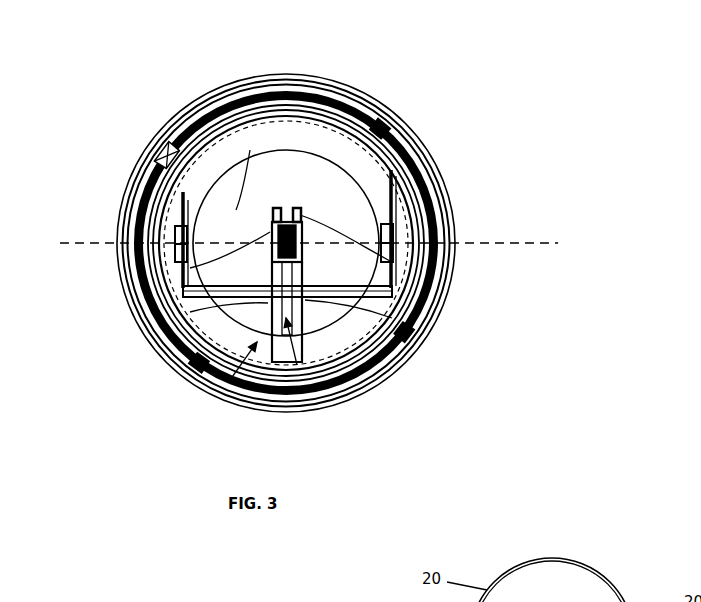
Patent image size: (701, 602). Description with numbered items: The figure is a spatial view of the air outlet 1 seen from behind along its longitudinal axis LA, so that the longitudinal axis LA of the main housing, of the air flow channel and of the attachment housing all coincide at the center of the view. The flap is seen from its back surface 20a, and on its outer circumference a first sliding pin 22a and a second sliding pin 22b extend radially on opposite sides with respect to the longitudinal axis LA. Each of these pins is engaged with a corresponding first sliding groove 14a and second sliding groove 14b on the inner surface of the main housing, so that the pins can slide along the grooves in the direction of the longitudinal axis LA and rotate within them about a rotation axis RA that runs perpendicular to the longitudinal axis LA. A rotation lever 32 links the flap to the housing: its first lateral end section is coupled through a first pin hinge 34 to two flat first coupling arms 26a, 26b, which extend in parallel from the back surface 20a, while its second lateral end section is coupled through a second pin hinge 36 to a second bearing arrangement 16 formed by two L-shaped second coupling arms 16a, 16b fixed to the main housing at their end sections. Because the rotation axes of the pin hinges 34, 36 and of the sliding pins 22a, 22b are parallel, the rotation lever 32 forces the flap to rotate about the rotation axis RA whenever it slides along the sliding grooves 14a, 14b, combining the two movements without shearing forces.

The air outlet 1 is at (462, 95).
The first sliding groove 14a is at (181, 210).
The second sliding groove 14b is at (393, 178).
The second bearing arrangement 16 is at (227, 383).
The second coupling arm 16a is at (200, 335).
The second coupling arm 16b is at (410, 340).
The back surface of the flap 20a is at (312, 195).
The first sliding pin 22a is at (178, 262).
The second sliding pin 22b is at (396, 243).
The first coupling arm 26a is at (165, 155).
The first coupling arm 26b is at (383, 127).
The rotation lever 32 is at (400, 305).
The first pin hinge 34 is at (288, 209).
The second pin hinge 36 is at (295, 372).
The rotation axis RA is at (324, 243).
The longitudinal axis LA is at (400, 283).